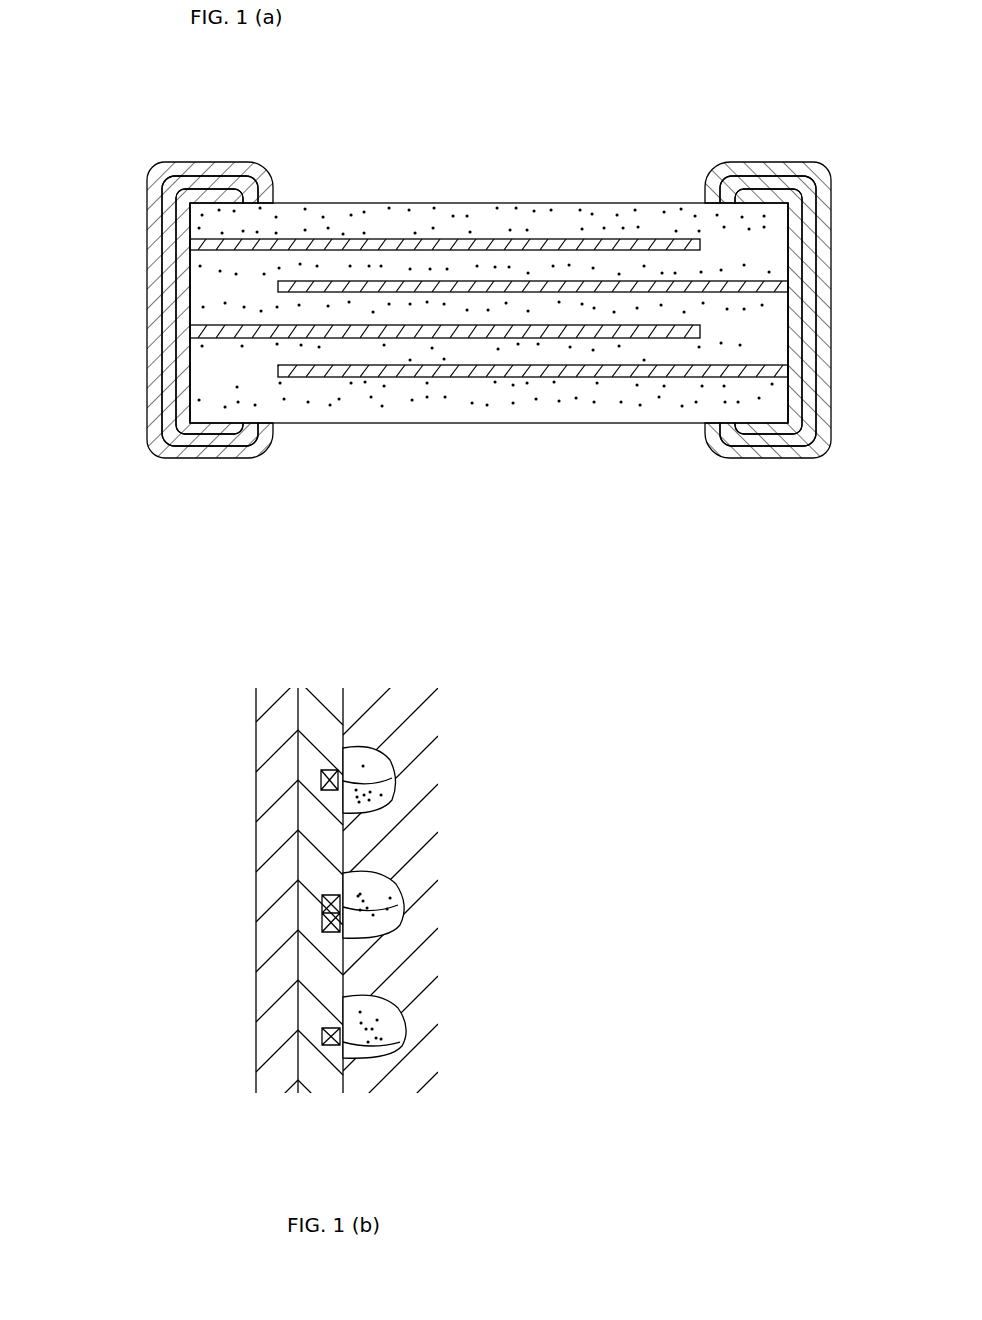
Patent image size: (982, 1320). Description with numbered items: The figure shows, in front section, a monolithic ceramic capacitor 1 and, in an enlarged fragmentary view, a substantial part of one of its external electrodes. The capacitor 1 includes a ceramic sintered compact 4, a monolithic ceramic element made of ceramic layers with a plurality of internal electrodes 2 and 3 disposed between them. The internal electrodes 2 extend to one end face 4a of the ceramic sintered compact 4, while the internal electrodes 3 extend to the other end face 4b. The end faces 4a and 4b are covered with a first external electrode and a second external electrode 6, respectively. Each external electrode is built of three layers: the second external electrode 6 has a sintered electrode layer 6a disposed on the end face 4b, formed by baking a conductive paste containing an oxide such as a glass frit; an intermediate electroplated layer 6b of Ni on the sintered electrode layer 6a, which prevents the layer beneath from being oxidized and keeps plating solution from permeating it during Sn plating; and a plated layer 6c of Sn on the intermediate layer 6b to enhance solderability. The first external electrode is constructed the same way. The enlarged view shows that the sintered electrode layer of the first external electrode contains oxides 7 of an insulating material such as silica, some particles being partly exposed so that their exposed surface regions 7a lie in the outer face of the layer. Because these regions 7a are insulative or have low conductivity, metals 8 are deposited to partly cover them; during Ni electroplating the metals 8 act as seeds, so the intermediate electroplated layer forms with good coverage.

The monolithic ceramic capacitor 1 is at (204, 150).
The internal electrodes 2 is at (400, 239).
The internal electrodes 3 is at (486, 281).
The ceramic sintered compact 4 is at (583, 201).
The end face 4a is at (190, 250).
The end face 4b is at (790, 240).
The second external electrode 6 is at (815, 310).
The sintered electrode layer 6a is at (800, 270).
The intermediate electroplated layer 6b is at (814, 316).
The plated layer 6c is at (829, 362).
The oxides 7 is at (398, 779).
The exposed surface regions 7a is at (373, 750).
The metals 8 is at (335, 770).